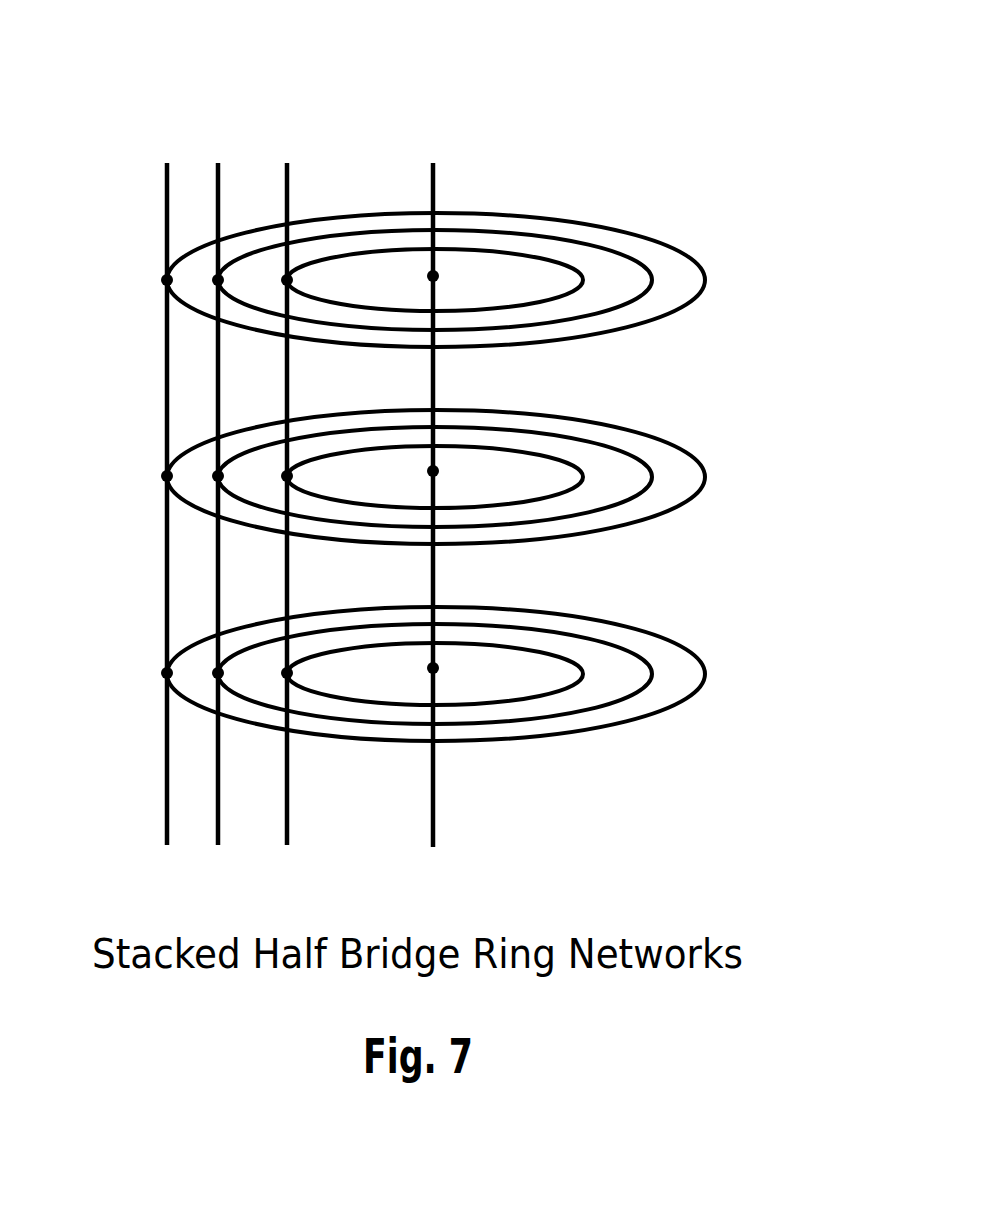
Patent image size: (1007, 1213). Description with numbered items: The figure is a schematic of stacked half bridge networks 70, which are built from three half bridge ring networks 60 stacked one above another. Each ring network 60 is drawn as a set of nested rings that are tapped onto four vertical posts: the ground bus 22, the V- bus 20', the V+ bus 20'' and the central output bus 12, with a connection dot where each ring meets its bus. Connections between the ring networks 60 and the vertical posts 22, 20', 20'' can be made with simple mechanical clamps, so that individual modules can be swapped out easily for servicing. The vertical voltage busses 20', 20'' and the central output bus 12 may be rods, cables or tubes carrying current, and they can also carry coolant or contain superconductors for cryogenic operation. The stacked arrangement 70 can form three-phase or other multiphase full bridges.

The stacked half bridge networks 70 is at (217, 123).
The ring networks 60 is at (720, 280).
The ground bus 22 is at (165, 747).
The V- bus 20' is at (148, 528).
The V+ bus 20'' is at (326, 528).
The central output bus 12 is at (513, 798).